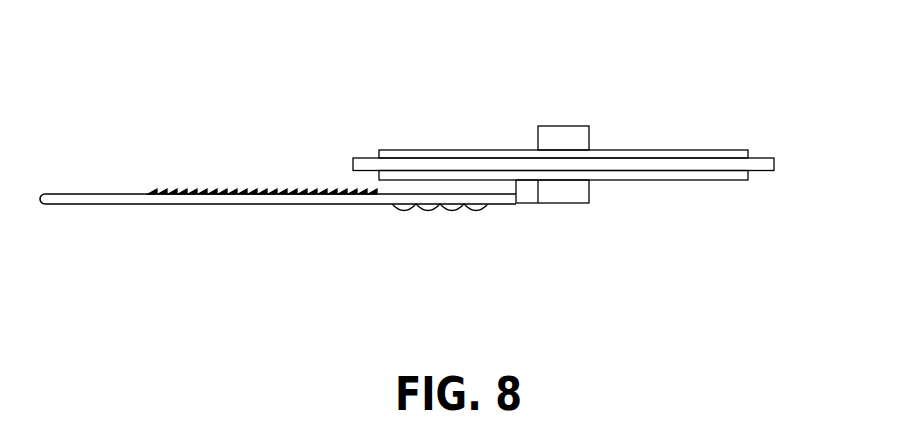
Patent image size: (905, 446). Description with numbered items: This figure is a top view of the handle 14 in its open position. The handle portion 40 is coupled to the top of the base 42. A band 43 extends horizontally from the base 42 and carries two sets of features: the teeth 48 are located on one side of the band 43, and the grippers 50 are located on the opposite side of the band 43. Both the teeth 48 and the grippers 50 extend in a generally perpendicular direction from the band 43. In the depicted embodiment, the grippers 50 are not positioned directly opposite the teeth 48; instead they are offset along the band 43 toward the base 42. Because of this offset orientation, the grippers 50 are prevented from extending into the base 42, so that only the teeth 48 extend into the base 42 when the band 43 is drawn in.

The handle 14 is at (499, 44).
The handle portion 40 is at (753, 167).
The base 42 is at (560, 132).
The band 43 is at (105, 200).
The teeth 48 is at (280, 190).
The grippers 50 is at (485, 206).